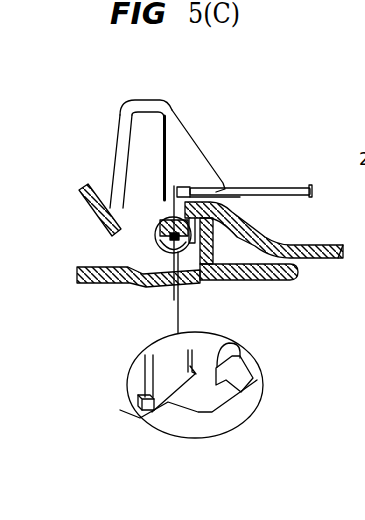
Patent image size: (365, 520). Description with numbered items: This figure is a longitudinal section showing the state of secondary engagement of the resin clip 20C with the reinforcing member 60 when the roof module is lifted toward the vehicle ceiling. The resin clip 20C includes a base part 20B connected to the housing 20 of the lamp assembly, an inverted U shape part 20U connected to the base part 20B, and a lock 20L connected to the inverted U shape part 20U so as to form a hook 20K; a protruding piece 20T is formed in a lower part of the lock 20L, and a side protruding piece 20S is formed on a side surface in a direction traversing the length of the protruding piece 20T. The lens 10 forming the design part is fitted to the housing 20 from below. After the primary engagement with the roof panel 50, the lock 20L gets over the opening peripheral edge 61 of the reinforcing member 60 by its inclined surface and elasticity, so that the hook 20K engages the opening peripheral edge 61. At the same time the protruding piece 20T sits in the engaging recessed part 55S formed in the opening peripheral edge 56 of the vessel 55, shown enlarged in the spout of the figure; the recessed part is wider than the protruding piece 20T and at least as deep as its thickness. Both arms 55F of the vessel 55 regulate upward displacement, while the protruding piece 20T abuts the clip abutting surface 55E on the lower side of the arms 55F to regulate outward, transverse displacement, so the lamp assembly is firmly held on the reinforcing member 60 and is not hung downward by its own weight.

The housing 20 is at (109, 98).
The inverted U shape part 20U is at (143, 100).
The hook 20K is at (178, 185).
The base part 20B is at (120, 142).
The resin clip 20C is at (114, 166).
The protruding piece 20T is at (166, 200).
The lock 20L is at (205, 157).
The side protruding piece 20S is at (145, 272).
The reinforcing member 60 is at (290, 187).
The opening peripheral edge 61 is at (237, 198).
The lens 10 is at (88, 267).
The roof panel 50 is at (343, 259).
The vessel 55 is at (258, 281).
The opening peripheral edge 56 is at (243, 344).
The arms 55F is at (158, 237).
The clip abutting surface 55E is at (193, 275).
The engaging recessed part 55S is at (150, 413).